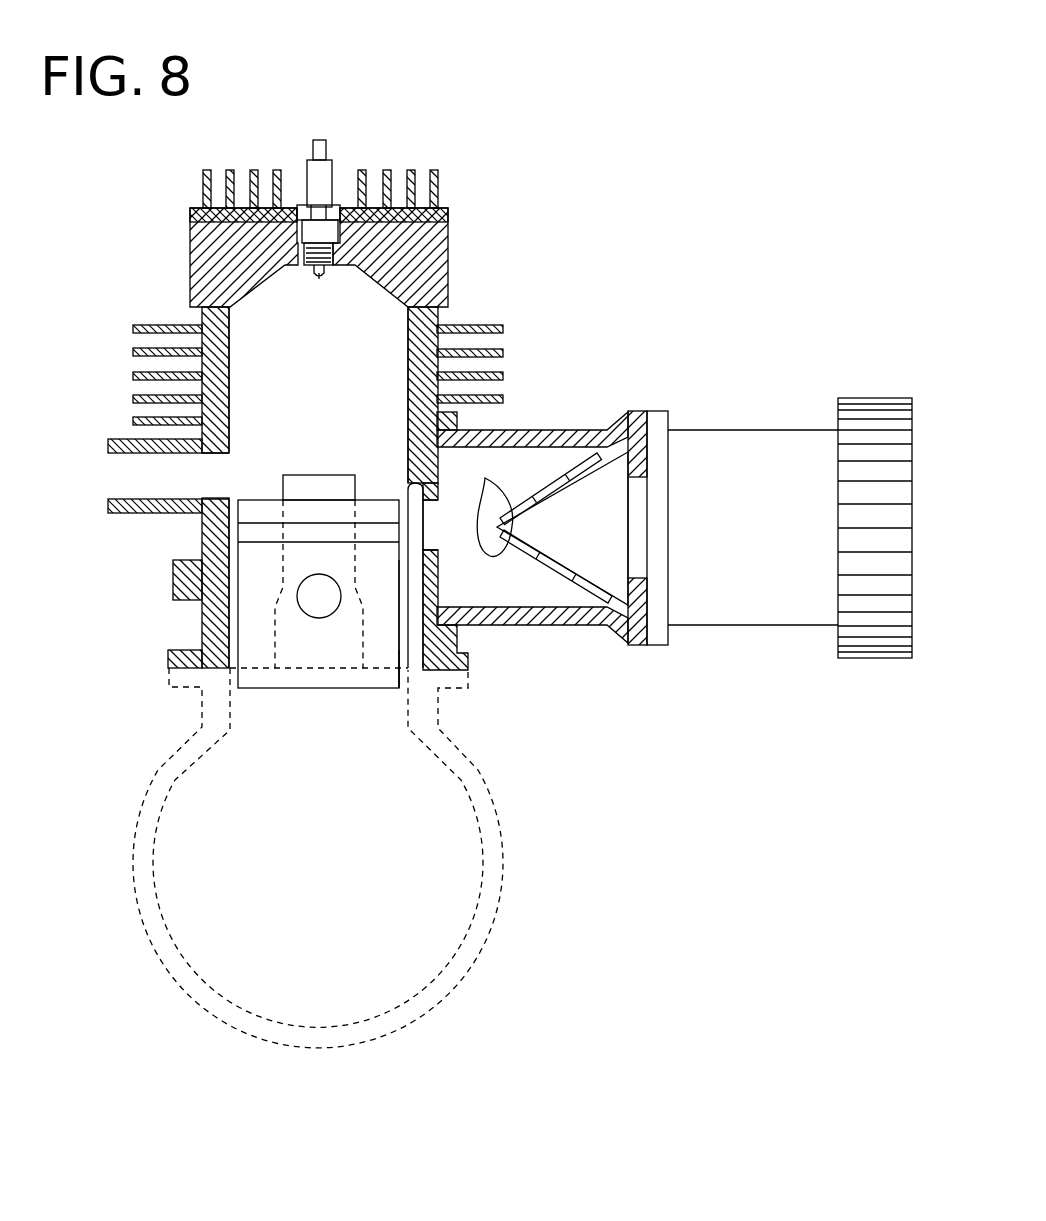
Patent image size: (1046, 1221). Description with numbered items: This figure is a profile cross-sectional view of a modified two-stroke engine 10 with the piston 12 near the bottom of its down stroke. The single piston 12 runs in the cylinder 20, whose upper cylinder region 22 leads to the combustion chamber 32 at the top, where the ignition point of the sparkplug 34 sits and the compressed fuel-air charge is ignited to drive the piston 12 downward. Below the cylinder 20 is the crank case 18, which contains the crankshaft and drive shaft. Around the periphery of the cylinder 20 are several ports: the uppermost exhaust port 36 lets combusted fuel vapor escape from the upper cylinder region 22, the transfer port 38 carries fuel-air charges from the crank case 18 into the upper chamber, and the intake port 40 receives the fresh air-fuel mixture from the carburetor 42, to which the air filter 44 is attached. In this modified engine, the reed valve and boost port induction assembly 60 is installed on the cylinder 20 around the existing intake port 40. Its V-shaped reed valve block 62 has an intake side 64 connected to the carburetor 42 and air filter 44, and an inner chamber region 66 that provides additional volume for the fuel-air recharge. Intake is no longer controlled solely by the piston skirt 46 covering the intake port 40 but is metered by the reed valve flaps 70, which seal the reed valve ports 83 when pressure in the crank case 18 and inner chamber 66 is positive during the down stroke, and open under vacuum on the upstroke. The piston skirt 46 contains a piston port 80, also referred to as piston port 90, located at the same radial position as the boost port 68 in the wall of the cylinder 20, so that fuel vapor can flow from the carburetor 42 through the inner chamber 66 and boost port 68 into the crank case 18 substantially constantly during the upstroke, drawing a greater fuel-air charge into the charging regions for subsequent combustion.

The two-stroke engine 10 is at (165, 177).
The piston 12 is at (248, 617).
The crank case 18 is at (195, 793).
The cylinder 20 is at (210, 542).
The upper cylinder region 22 is at (255, 333).
The combustion chamber 32 is at (280, 287).
The sparkplug 34 is at (327, 177).
The exhaust port 36 is at (123, 478).
The transfer port 38 is at (312, 492).
The intake port 40 is at (432, 530).
The carburetor 42 is at (793, 443).
The air filter 44 is at (871, 418).
The piston skirt 46 is at (402, 658).
The reed valve and boost port induction assembly 60 is at (572, 667).
The reed valve block 62 is at (580, 437).
The intake side 64 is at (633, 420).
The inner chamber region 66 is at (528, 463).
The boost port 68 is at (412, 497).
The reed valve flaps 70 is at (488, 484).
The piston port 80 is at (400, 585).
The reed valve ports 83 is at (580, 570).
The piston port 90 is at (432, 543).